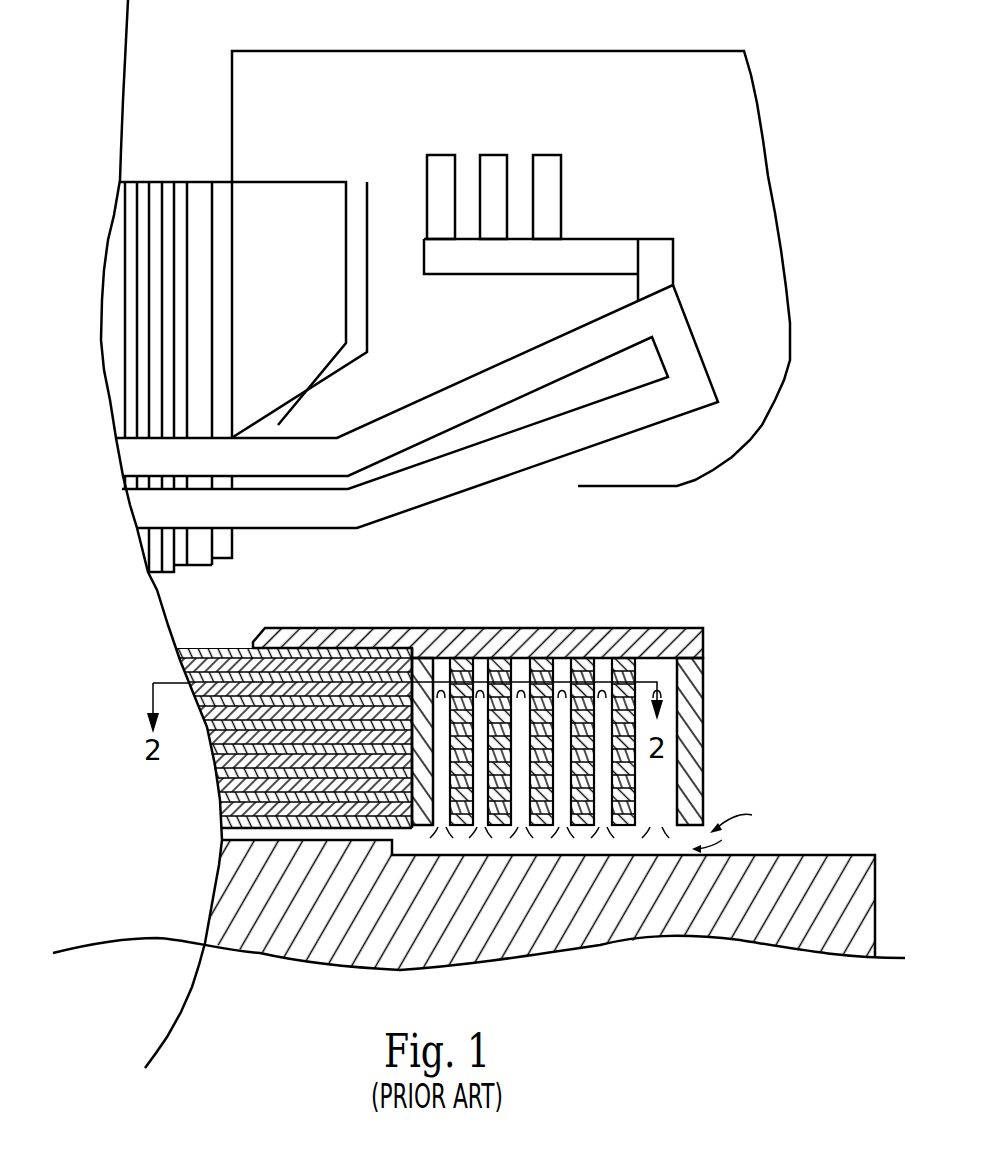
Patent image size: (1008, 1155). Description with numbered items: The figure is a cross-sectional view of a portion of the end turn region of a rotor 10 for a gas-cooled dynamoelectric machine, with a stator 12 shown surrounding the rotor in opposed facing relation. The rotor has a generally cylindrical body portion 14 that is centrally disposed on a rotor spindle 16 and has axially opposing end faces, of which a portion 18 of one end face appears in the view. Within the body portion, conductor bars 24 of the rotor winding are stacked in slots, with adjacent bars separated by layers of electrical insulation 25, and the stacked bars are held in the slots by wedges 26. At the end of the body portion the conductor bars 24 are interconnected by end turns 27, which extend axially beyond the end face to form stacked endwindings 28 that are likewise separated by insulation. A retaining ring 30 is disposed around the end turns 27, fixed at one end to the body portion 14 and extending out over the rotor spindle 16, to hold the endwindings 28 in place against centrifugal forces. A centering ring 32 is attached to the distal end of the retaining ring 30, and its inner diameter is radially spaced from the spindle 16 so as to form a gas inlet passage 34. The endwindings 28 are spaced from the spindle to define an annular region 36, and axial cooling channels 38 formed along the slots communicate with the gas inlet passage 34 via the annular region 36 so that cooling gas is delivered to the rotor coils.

The rotor 10 is at (554, 690).
The stator 12 is at (816, 228).
The body portion 14 is at (479, 911).
The rotor spindle 16 is at (680, 923).
The portion of one end face 18 is at (394, 835).
The conductor bars 24 is at (262, 730).
The layers of electrical insulation 25 is at (218, 742).
The wedges 26 is at (188, 657).
The end turns 27 is at (500, 824).
The stacked endwindings 28 is at (630, 832).
The retaining ring 30 is at (490, 633).
The centering ring 32 is at (692, 723).
The gas inlet passage 34 is at (736, 829).
The annular region 36 is at (528, 756).
The axial cooling channels 38 is at (320, 833).